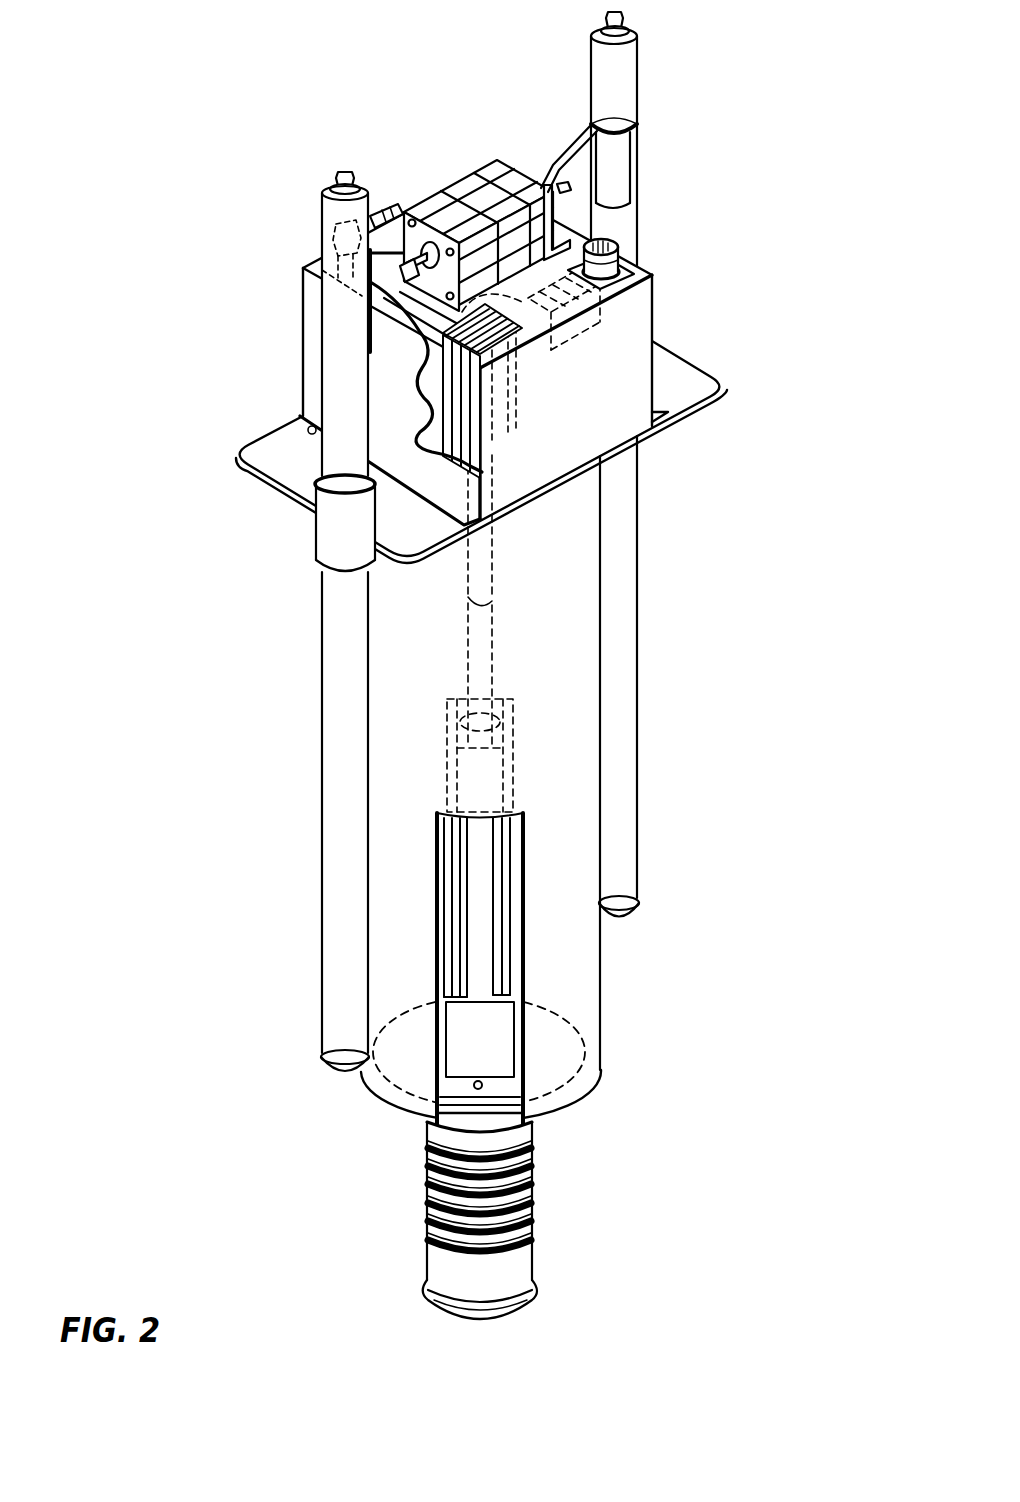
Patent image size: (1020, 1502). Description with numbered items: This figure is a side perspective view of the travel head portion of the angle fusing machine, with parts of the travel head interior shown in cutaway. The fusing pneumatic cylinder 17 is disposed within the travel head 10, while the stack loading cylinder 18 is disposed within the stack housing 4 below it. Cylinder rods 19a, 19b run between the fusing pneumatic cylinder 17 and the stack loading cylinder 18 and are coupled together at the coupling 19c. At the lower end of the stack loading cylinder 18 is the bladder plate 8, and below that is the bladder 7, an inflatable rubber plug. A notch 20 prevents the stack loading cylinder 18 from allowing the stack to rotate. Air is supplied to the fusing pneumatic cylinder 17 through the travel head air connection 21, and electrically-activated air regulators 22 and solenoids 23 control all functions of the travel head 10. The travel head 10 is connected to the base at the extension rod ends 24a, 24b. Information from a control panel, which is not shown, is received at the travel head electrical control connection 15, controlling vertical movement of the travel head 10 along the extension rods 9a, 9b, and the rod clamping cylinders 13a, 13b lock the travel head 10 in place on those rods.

The stack housing 4 is at (602, 982).
The bladder 7 is at (533, 1203).
The bladder plate 8 is at (583, 1036).
The extension rod 9a is at (323, 712).
The extension rod 9b is at (637, 586).
The travel head 10 is at (276, 491).
The rod clamping cylinder 13a is at (433, 200).
The rod clamping cylinder 13b is at (489, 167).
The travel head electrical control connection 15 is at (617, 242).
The fusing pneumatic cylinder 17 is at (532, 419).
The stack loading cylinder 18 is at (511, 765).
The cylinder rod 19a is at (496, 559).
The cylinder rod 19b is at (493, 655).
The coupling 19c is at (472, 600).
The notch 20 is at (524, 890).
The travel head air connection 21 is at (340, 228).
The electrically-activated air regulators 22 is at (598, 330).
The solenoids 23 is at (440, 370).
The extension rod end 24a is at (325, 1068).
The extension rod end 24b is at (639, 904).